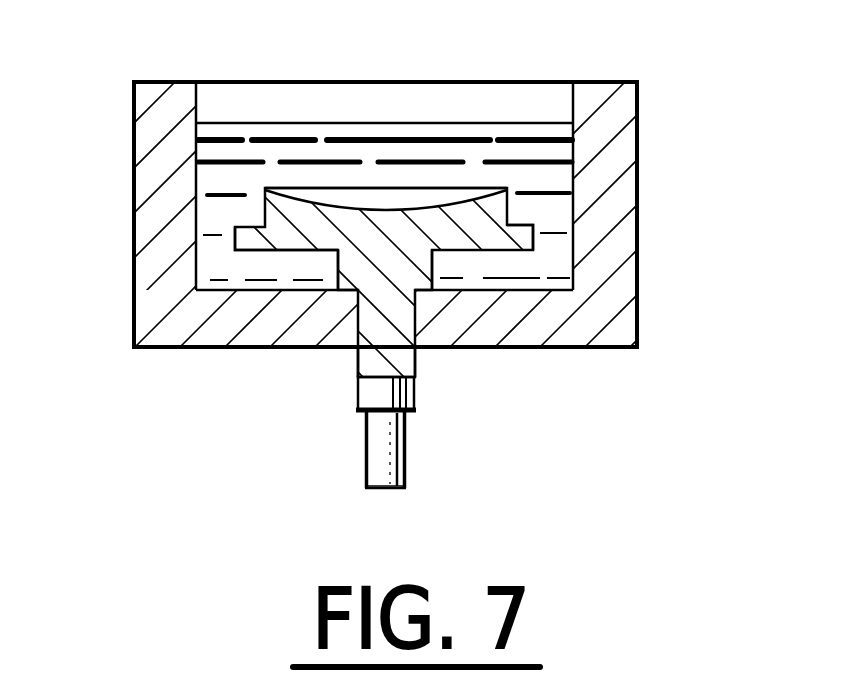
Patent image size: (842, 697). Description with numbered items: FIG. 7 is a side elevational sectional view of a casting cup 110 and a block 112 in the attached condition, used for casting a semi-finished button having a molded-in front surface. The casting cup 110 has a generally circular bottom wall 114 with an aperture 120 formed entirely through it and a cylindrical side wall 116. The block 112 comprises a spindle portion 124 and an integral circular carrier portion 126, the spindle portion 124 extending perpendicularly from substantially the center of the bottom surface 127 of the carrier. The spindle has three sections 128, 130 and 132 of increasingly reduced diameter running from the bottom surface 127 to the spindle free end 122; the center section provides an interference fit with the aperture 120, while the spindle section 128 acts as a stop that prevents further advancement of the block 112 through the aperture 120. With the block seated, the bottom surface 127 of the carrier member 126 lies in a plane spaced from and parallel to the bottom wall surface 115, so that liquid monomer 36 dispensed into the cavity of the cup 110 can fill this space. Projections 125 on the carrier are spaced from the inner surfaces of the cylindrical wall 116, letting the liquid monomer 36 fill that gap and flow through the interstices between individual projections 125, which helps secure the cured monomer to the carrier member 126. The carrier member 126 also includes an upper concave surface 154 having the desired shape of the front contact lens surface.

The liquid monomer 36 is at (287, 127).
The upper concave surface 154 is at (432, 250).
The casting cup 110 is at (421, 229).
The carrier portion 126 is at (510, 212).
The cylindrical side wall 116 is at (145, 233).
The projections 125 is at (533, 242).
The bottom wall surface 115 is at (545, 275).
The bottom wall 114 is at (585, 348).
The bottom surface 127 is at (255, 252).
The spindle section 128 is at (340, 258).
The aperture 120 is at (354, 253).
The spindle section 130 is at (358, 377).
The spindle portion 124 is at (415, 375).
The block 112 is at (432, 473).
The spindle section 132 is at (408, 480).
The spindle free end 122 is at (390, 489).